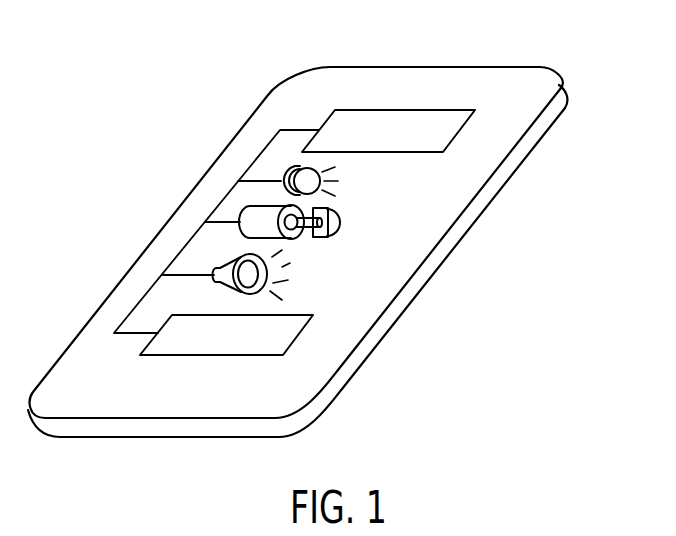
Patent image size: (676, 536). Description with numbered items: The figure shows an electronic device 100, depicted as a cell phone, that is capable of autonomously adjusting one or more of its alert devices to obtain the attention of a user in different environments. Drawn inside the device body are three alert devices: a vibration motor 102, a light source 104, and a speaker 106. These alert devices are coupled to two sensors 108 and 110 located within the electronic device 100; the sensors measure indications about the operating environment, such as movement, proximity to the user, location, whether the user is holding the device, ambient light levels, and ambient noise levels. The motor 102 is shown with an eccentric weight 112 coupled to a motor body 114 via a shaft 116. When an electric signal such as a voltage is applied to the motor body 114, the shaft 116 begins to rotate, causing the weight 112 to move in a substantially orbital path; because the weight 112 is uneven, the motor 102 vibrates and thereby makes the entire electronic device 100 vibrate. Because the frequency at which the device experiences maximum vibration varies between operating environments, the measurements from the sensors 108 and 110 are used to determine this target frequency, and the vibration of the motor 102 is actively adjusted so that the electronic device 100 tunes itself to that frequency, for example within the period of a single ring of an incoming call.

The electronic device 100 is at (330, 66).
The vibration motor 102 is at (292, 227).
The light source 104 is at (366, 178).
The speaker 106 is at (300, 289).
The sensor 108 is at (460, 130).
The sensor 110 is at (297, 336).
The eccentric weight 112 is at (330, 232).
The motor body 114 is at (247, 211).
The shaft 116 is at (315, 238).